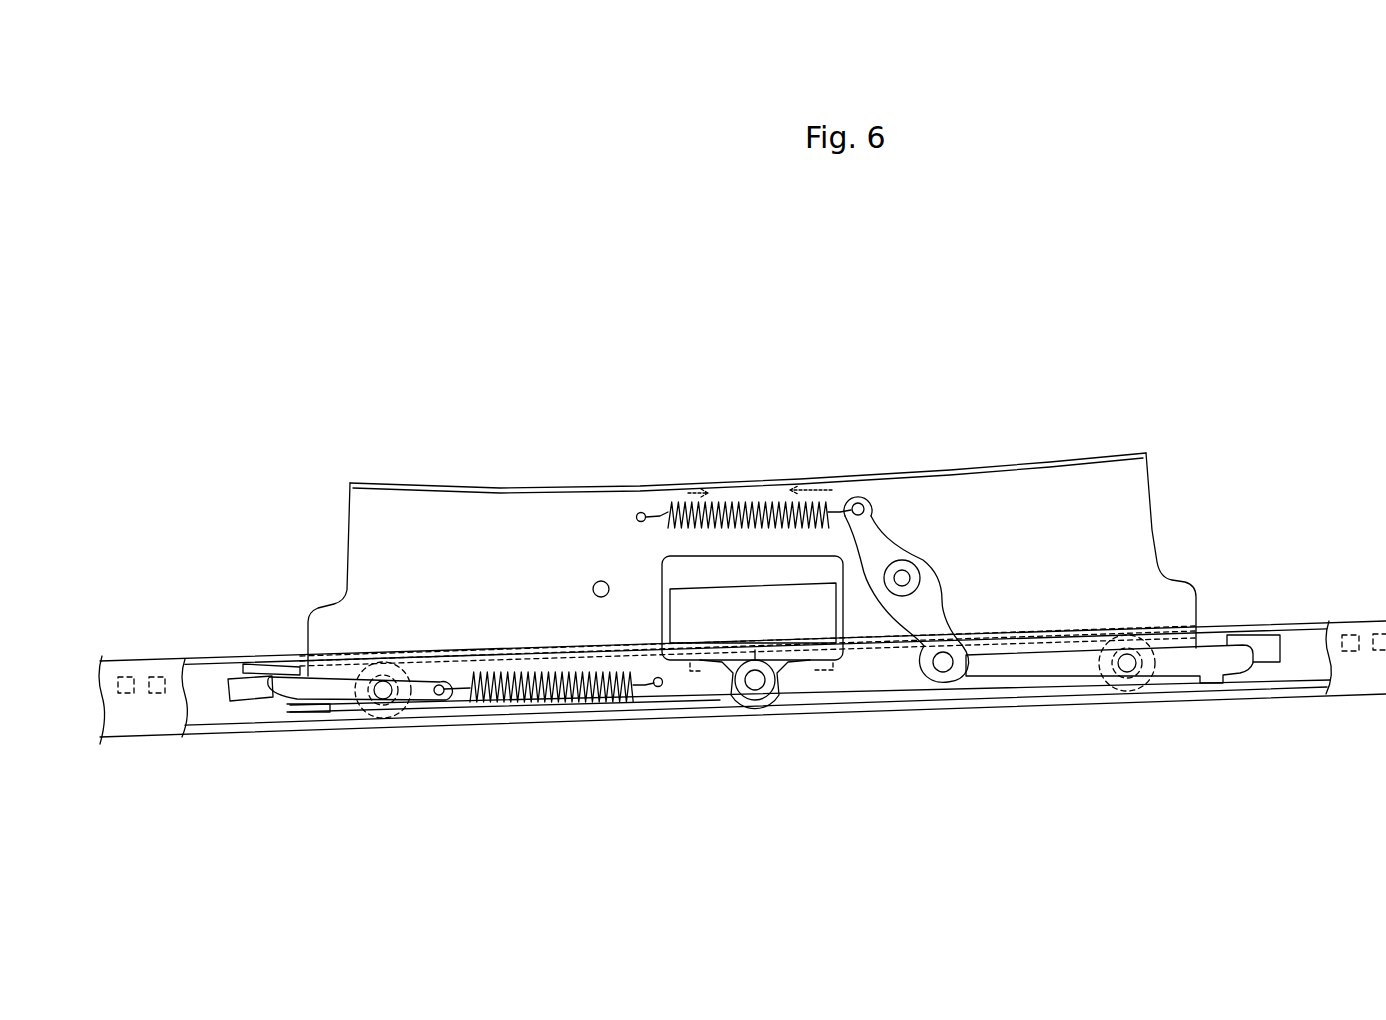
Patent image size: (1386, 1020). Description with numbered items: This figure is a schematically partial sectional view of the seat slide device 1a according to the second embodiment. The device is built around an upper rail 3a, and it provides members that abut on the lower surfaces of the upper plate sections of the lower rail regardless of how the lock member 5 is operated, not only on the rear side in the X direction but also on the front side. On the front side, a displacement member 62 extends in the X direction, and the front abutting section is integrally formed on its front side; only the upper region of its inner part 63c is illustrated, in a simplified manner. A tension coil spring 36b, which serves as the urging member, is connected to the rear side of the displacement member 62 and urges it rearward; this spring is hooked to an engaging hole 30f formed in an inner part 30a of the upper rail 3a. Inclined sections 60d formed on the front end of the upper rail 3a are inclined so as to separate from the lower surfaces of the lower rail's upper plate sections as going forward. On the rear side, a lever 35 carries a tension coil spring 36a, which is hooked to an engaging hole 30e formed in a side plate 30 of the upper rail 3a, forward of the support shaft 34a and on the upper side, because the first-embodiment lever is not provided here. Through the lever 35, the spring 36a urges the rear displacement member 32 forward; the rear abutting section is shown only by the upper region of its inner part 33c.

The seat slide device 1a is at (1133, 347).
The upper rail 3a is at (1013, 455).
The lock member 5 is at (683, 622).
The side plate 30 is at (1143, 516).
The inner part 30a is at (704, 682).
The engaging hole 30e is at (640, 512).
The engaging hole 30f is at (657, 688).
The displacement member 32 is at (1035, 668).
The inner part 33c is at (1233, 630).
The support shaft 34a is at (905, 575).
The lever 35 is at (900, 553).
The tension coil spring 36a is at (740, 500).
The tension coil spring 36b is at (550, 690).
The inclined sections 60d is at (247, 690).
The displacement member 62 is at (340, 700).
The inner part 63c is at (238, 664).